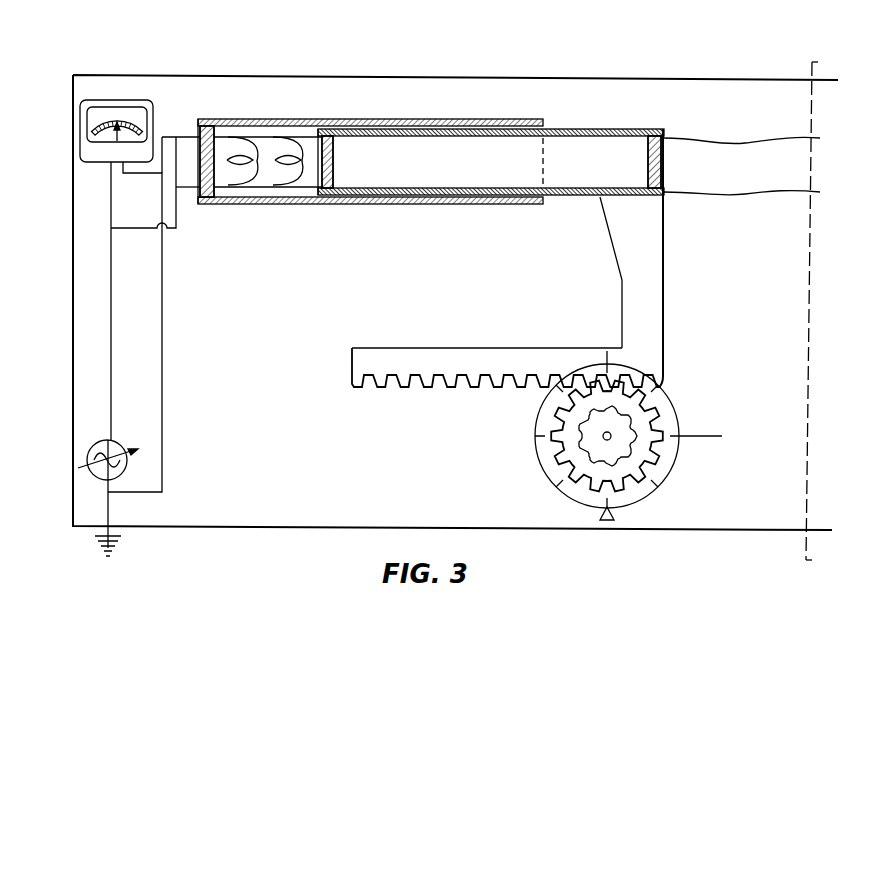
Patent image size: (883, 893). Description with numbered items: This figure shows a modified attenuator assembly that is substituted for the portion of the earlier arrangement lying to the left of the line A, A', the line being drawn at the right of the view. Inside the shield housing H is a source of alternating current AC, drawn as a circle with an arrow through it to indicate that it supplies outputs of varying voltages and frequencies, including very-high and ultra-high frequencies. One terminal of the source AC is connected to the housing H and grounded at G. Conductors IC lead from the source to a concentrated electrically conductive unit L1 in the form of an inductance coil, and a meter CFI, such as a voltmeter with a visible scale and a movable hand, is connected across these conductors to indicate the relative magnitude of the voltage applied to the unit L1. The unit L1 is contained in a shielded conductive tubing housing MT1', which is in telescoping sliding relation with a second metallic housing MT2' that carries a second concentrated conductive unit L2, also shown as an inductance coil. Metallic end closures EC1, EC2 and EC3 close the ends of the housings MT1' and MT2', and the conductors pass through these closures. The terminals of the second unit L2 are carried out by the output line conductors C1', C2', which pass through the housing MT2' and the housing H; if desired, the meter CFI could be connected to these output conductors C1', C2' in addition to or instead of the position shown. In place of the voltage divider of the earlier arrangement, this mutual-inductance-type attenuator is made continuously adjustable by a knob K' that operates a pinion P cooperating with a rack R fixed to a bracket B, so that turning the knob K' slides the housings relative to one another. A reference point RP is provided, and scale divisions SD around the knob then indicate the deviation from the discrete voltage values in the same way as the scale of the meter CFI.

The shield housing H is at (370, 77).
The line A is at (820, 303).
The line A' is at (816, 551).
The meter CFI is at (97, 101).
The conductors IC is at (170, 138).
The source of alternating current AC is at (111, 444).
The ground G is at (115, 548).
The tubing housing MT1' is at (370, 150).
The metallic housing MT2' is at (491, 152).
The metallic end closure EC1 is at (200, 121).
The metallic end closure EC2 is at (343, 201).
The metallic end closure EC3 is at (662, 194).
The concentrated electrically conductive unit L1 is at (252, 183).
The second concentrated electrically conductive unit L2 is at (284, 188).
The output line conductor C1' is at (764, 142).
The output line conductor C2' is at (759, 195).
The bracket B is at (664, 308).
The rack R is at (455, 356).
The pinion P is at (570, 449).
The knob K' is at (594, 465).
The scale divisions SD is at (534, 436).
The reference point RP is at (615, 513).